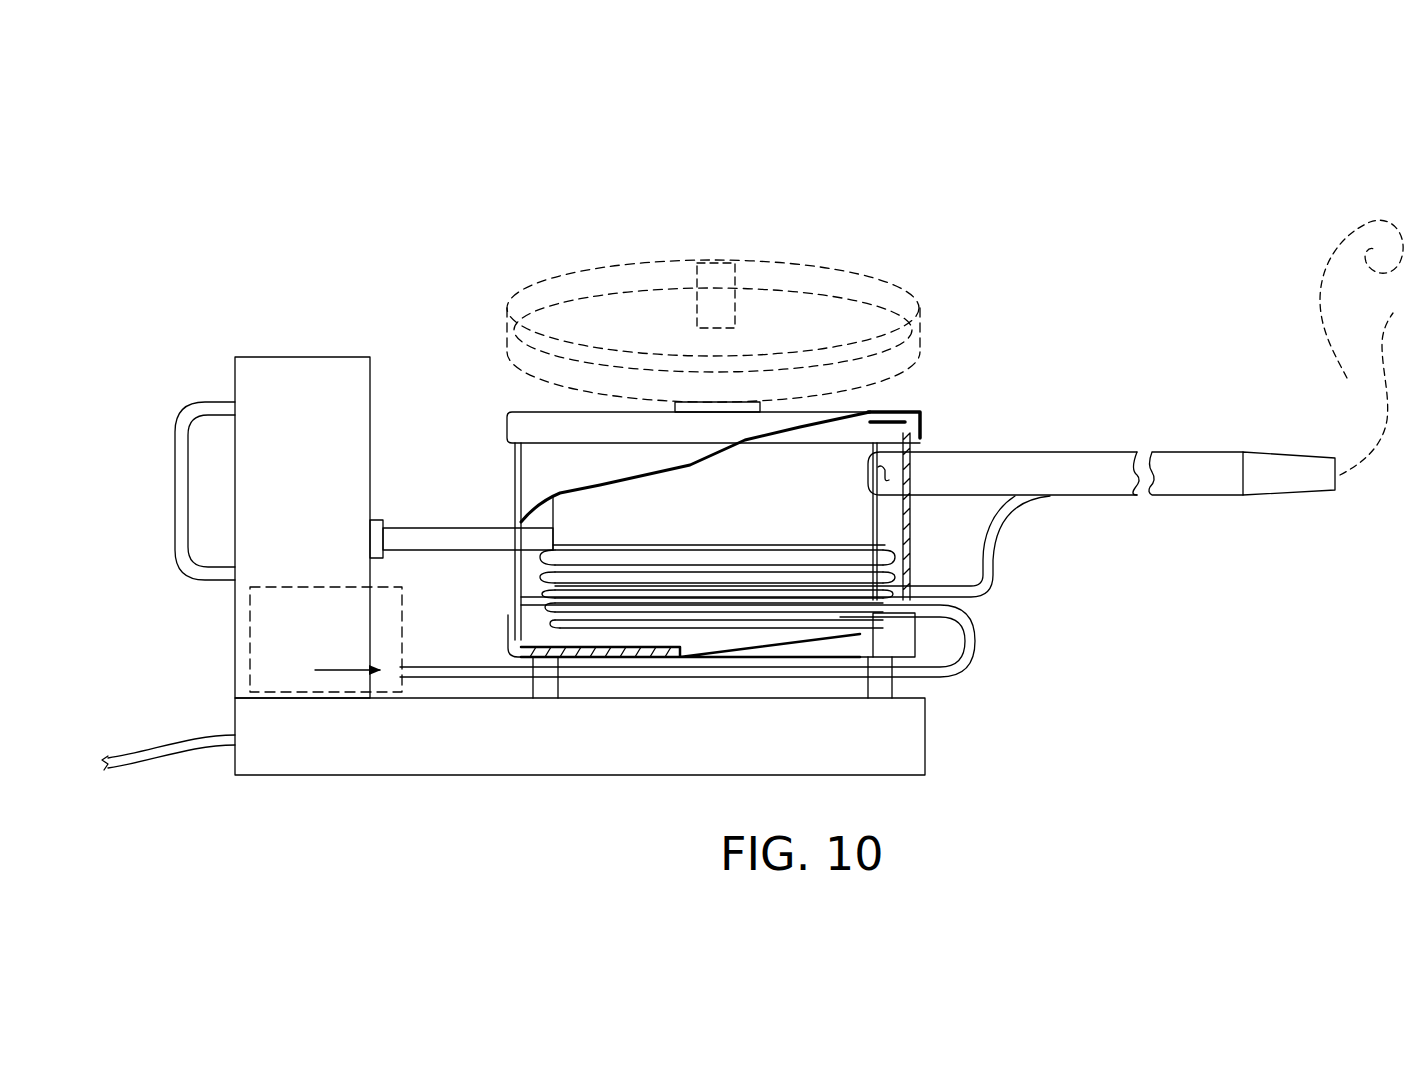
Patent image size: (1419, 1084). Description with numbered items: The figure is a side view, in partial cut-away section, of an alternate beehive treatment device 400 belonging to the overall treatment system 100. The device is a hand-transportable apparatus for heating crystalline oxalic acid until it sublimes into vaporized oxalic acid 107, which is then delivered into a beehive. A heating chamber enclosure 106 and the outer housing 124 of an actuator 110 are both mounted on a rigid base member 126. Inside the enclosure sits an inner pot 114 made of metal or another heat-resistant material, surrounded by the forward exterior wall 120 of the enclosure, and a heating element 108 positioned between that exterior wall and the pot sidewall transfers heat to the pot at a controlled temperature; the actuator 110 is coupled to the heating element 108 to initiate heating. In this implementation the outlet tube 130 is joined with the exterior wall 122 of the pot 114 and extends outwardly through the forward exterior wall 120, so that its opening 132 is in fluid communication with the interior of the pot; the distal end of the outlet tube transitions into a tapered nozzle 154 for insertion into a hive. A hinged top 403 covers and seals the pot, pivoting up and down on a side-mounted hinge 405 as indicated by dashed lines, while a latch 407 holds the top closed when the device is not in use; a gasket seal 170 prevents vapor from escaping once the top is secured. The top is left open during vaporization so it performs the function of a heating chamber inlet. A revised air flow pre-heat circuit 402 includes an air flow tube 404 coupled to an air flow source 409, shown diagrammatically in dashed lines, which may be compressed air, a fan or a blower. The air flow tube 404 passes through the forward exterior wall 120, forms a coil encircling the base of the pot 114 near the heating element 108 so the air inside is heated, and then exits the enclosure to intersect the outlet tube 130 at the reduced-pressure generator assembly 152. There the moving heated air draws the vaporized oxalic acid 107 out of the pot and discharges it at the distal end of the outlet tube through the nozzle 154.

The vaporizer system 100 is at (278, 210).
The alternate beehive treatment device 400 is at (265, 297).
The heating chamber enclosure 106 is at (698, 483).
The vaporized oxalic acid 107 is at (1320, 307).
The heating element 108 is at (413, 528).
The actuator 110 is at (230, 656).
The inner pot 114 is at (880, 530).
The exterior wall 120 is at (515, 479).
The exterior wall of pot 122 is at (876, 503).
The outer housing 124 is at (235, 603).
The rigid base member 126 is at (925, 746).
The outlet tube 130 is at (1025, 452).
The opening 132 is at (870, 474).
The reduced-pressure generator assembly 152 is at (1062, 508).
The nozzle 154 is at (1277, 452).
The gasket seal 170 is at (908, 415).
The air flow pre-heat circuit 402 is at (975, 673).
The hinged top 403 is at (900, 295).
The air flow tube 404 is at (515, 602).
The side-mounted hinge 405 is at (700, 402).
The latch 407 is at (697, 282).
The air flow source 409 is at (345, 590).